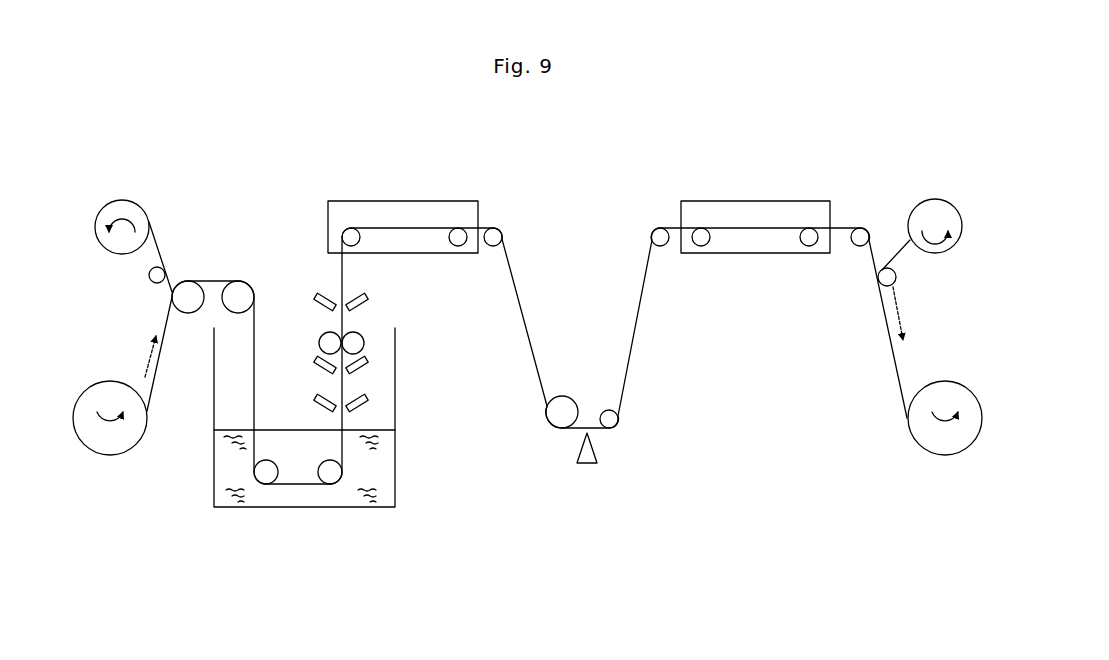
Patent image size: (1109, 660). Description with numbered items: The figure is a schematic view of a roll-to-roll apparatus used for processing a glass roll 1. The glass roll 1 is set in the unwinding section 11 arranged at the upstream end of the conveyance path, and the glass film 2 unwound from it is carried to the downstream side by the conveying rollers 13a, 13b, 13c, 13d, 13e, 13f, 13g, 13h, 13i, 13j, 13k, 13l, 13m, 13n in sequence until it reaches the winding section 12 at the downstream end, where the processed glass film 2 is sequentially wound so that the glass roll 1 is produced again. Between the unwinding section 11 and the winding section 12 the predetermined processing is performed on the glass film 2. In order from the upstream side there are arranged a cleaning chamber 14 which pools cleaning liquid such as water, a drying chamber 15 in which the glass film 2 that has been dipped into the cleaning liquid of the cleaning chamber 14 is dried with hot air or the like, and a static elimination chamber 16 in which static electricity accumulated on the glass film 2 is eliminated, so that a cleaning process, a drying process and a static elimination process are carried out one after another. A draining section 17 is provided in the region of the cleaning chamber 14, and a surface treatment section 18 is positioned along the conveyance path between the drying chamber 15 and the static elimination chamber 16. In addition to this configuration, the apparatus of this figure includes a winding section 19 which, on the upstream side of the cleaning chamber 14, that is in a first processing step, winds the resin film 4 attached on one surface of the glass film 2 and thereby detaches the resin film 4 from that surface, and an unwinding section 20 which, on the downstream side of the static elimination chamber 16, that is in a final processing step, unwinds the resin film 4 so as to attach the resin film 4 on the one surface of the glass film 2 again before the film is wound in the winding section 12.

The glass roll 1 is at (523, 415).
The glass film 2 is at (637, 338).
The resin film 4 is at (527, 356).
The unwinding section 11 is at (84, 390).
The winding section 12 is at (963, 382).
The conveying roller 13a is at (187, 292).
The conveying roller 13b is at (238, 292).
The conveying roller 13c is at (264, 474).
The conveying roller 13d is at (331, 474).
The conveying roller 13e is at (330, 334).
The conveying roller 13f is at (351, 233).
The conveying roller 13g is at (457, 233).
The conveying roller 13h is at (495, 233).
The conveying roller 13i is at (563, 406).
The conveying roller 13j is at (618, 424).
The conveying roller 13k is at (657, 233).
The conveying roller 13l is at (700, 233).
The conveying roller 13m is at (809, 233).
The conveying roller 13n is at (862, 233).
The cleaning chamber 14 is at (378, 462).
The drying chamber 15 is at (402, 212).
The static elimination chamber 16 is at (752, 212).
The draining section 17 is at (314, 397).
The surface treatment section 18 is at (587, 463).
The winding section 19 is at (123, 203).
The unwinding section 20 is at (935, 205).